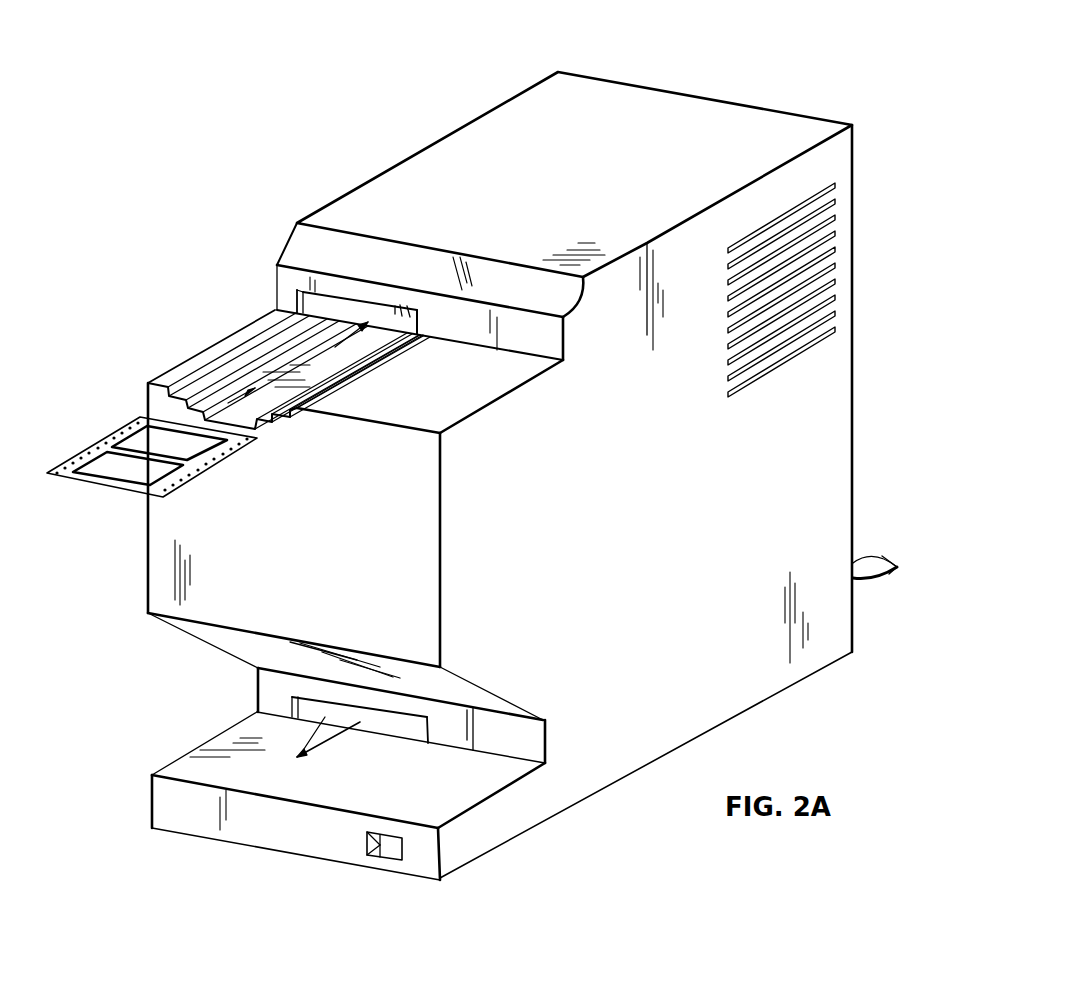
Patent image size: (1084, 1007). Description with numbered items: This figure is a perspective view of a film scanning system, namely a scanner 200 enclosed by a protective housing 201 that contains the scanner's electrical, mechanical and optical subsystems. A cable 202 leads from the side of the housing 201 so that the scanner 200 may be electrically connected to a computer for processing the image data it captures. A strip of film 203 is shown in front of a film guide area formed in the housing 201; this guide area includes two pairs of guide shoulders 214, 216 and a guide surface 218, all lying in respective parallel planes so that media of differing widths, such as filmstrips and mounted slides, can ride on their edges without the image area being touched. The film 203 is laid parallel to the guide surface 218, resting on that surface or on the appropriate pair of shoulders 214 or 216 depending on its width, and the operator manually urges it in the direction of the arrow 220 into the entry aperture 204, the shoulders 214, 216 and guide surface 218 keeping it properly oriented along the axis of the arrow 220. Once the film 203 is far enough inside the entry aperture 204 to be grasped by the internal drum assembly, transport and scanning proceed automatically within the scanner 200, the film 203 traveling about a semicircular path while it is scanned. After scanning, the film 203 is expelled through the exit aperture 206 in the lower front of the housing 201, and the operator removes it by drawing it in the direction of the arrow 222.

The scanner 200 is at (726, 96).
The protective housing 201 is at (770, 672).
The cable 202 is at (872, 578).
The strip of film 203 is at (102, 424).
The entry aperture 204 is at (345, 314).
The exit aperture 206 is at (325, 717).
The guide shoulders 214 is at (247, 373).
The guide shoulders 216 is at (205, 382).
The guide surface 218 is at (283, 370).
The arrow 220 is at (332, 342).
The arrow 222 is at (360, 722).